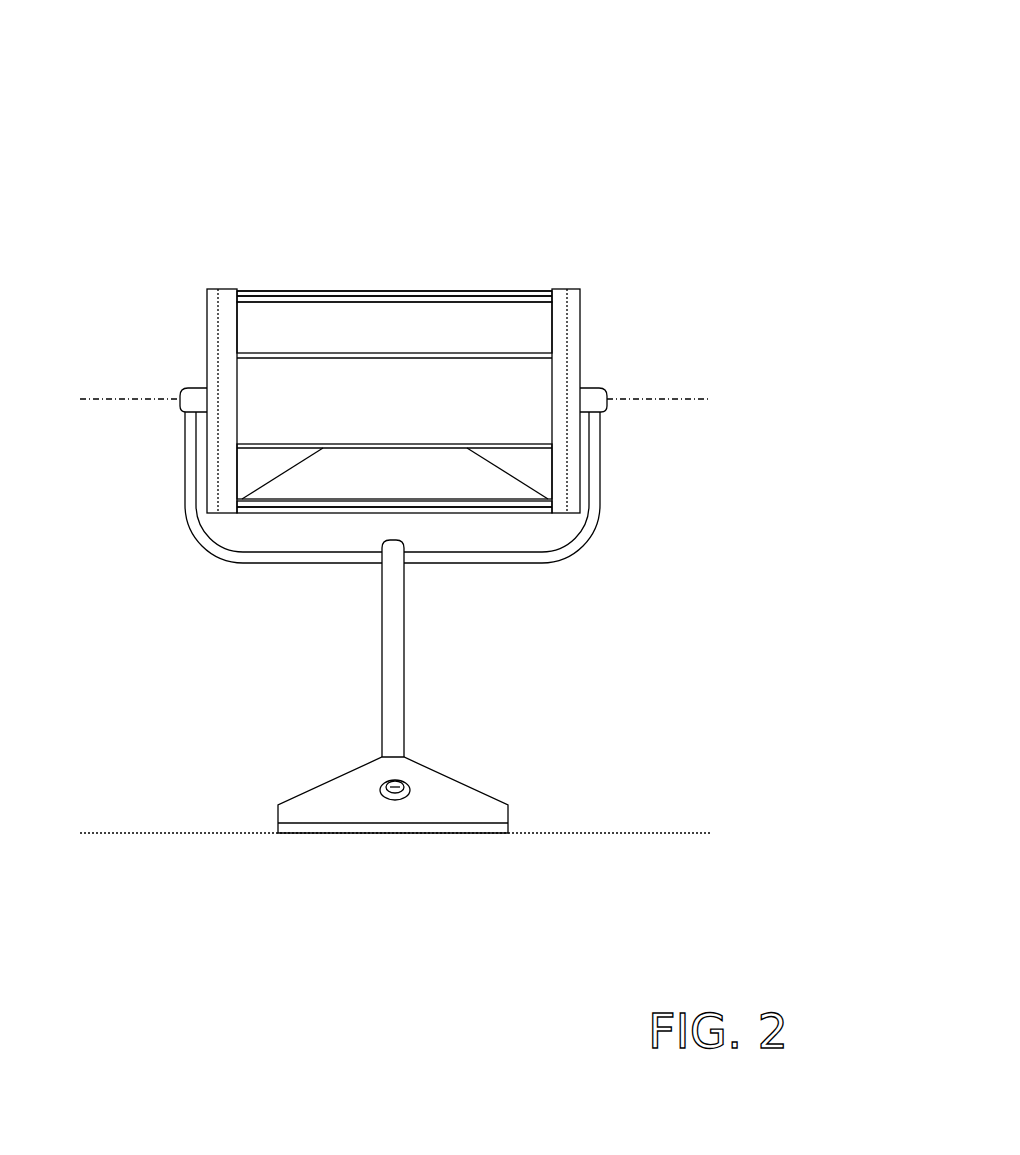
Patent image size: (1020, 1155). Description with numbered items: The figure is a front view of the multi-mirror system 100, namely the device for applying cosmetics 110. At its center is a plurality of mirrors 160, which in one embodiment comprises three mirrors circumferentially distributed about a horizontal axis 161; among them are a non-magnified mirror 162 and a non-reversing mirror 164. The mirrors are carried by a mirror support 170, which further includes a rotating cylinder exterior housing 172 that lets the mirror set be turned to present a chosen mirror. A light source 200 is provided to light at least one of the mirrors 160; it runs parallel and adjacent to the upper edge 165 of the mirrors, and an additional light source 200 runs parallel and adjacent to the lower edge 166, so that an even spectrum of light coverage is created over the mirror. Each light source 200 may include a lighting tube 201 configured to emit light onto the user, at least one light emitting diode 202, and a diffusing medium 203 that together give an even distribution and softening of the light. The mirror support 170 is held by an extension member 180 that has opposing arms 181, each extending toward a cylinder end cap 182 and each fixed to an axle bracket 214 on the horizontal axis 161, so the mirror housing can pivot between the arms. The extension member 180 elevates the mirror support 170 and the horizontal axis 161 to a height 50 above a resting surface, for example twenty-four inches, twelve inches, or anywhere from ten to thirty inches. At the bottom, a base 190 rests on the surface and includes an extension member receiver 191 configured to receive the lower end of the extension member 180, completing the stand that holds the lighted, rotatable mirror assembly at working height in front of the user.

The mirror assembly 100 is at (541, 76).
The device for applying cosmetics 110 is at (568, 98).
The plurality of mirrors 160 is at (388, 471).
The horizontal axis 161 is at (148, 396).
The non-magnified mirror 162 is at (512, 320).
The non-reversing mirror 164 is at (460, 478).
The upper edge 165 is at (290, 298).
The lower edge 166 is at (538, 510).
The mirror support 170 is at (516, 384).
The rotating cylinder exterior housing 172 is at (516, 422).
The extension member 180 is at (390, 561).
The opposing arms 181 is at (597, 522).
The cylinder end cap 182 is at (210, 323).
The base 190 is at (312, 808).
The extension member receiver 191 is at (390, 755).
The light source 200 is at (482, 296).
The lighting tube 201 is at (357, 298).
The light emitting diode 202 is at (421, 510).
The diffusing medium 203 is at (447, 510).
The axle bracket 214 is at (198, 394).
The height 50 is at (88, 833).